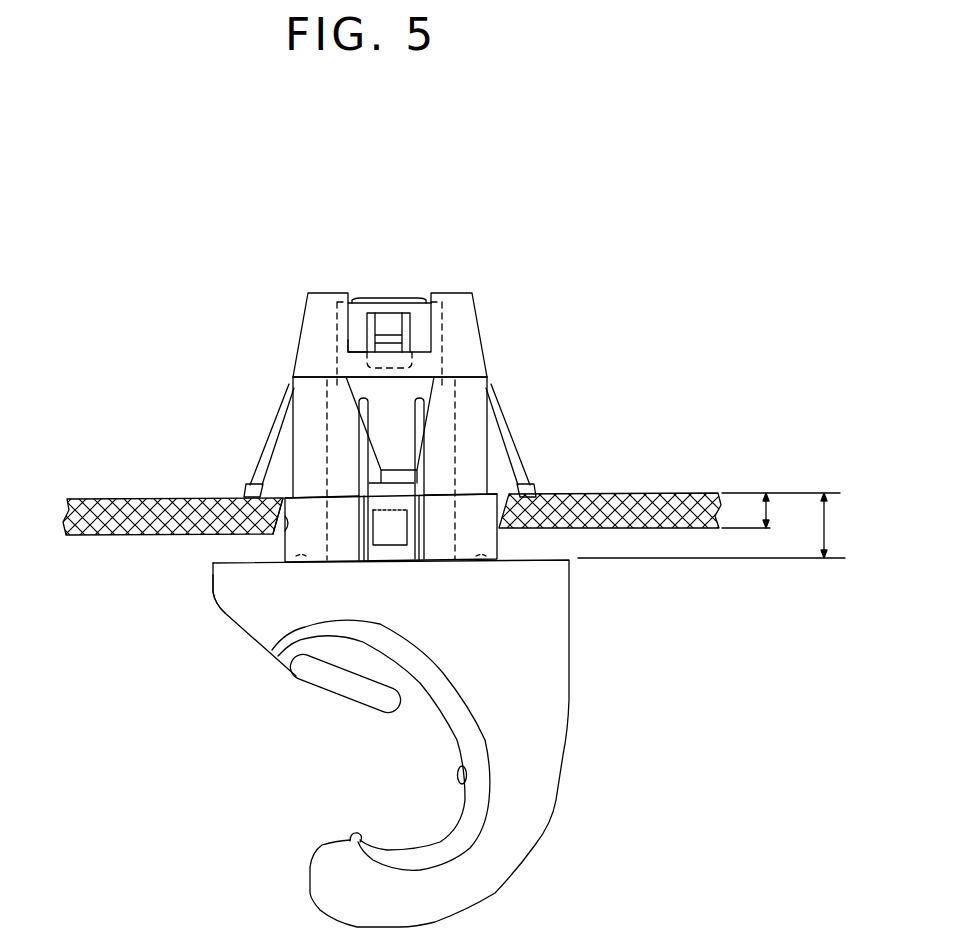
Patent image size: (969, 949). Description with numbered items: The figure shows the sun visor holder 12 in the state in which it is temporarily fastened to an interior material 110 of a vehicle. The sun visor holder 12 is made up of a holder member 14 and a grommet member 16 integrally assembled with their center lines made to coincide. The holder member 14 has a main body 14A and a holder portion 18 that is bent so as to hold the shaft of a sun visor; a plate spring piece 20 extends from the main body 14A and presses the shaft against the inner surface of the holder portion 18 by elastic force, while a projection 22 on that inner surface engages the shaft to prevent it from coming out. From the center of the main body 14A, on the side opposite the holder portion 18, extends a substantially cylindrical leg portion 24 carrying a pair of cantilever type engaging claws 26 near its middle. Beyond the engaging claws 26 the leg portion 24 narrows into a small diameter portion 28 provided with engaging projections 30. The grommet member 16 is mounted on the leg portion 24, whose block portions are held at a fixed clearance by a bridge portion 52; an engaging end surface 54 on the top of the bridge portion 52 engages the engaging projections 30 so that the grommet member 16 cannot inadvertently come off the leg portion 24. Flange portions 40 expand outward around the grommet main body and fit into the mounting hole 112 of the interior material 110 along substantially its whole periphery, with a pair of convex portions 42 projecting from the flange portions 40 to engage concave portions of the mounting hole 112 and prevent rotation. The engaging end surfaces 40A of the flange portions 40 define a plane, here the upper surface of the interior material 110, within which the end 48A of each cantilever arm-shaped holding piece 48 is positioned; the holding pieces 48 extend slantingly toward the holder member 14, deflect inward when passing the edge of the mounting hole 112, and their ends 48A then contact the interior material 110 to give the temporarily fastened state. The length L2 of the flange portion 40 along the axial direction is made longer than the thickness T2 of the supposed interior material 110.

The sun visor holder 12 is at (562, 170).
The holder member 14 is at (575, 624).
The main body 14A is at (222, 598).
The grommet member 16 is at (450, 256).
The holder portion 18 is at (535, 843).
The plate spring piece 20 is at (330, 690).
The projection 22 is at (352, 838).
The leg portion 24 is at (372, 295).
The engaging claws 26 is at (398, 444).
The small diameter portion 28 is at (337, 358).
The engaging projections 30 is at (389, 320).
The flange portions 40 is at (314, 552).
The engaging end surfaces 40A is at (313, 499).
The convex portions 42 is at (404, 558).
The holding piece 48 is at (287, 414).
The end of holding piece 48A is at (227, 500).
The bridge portion 52 is at (428, 350).
The engaging end surface 54 is at (358, 350).
The interior material 110 is at (103, 507).
The mounting hole 112 is at (283, 542).
The thickness of interior material T2 is at (781, 511).
The length of flange portion L2 is at (827, 508).